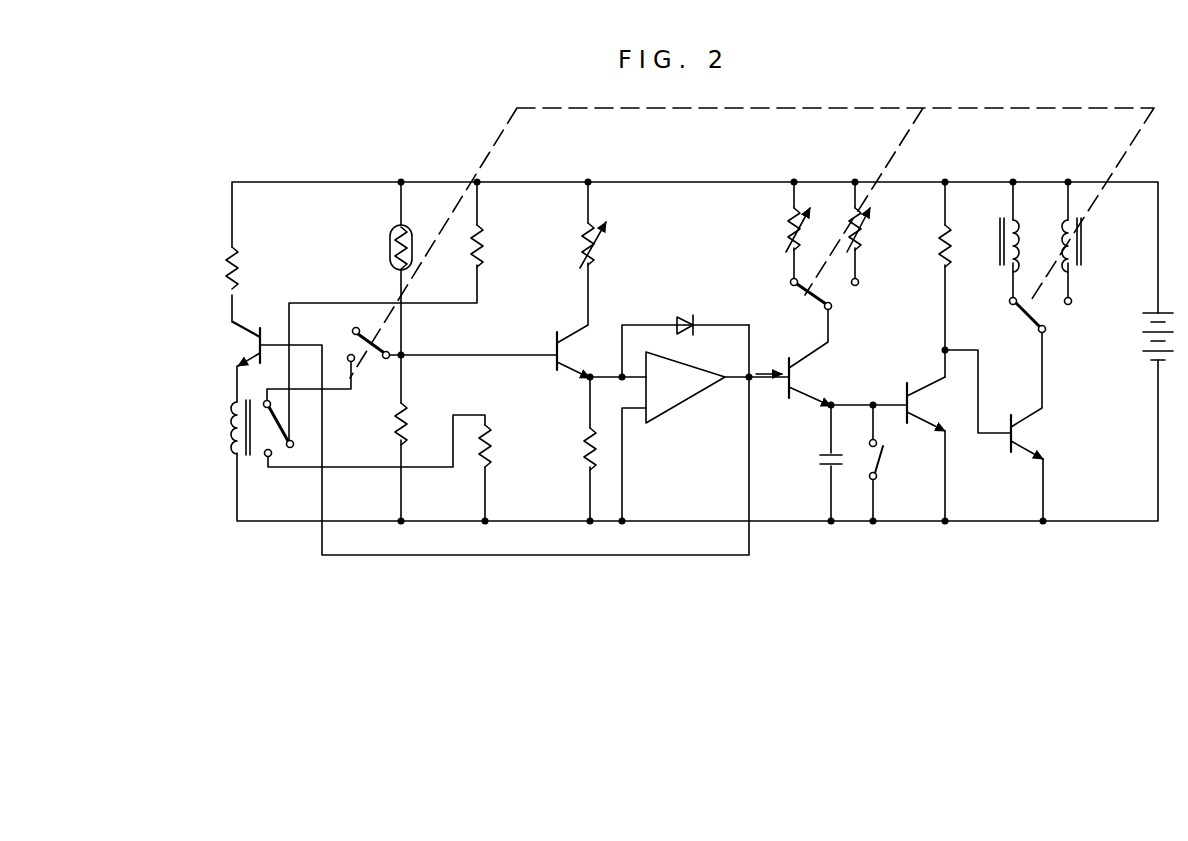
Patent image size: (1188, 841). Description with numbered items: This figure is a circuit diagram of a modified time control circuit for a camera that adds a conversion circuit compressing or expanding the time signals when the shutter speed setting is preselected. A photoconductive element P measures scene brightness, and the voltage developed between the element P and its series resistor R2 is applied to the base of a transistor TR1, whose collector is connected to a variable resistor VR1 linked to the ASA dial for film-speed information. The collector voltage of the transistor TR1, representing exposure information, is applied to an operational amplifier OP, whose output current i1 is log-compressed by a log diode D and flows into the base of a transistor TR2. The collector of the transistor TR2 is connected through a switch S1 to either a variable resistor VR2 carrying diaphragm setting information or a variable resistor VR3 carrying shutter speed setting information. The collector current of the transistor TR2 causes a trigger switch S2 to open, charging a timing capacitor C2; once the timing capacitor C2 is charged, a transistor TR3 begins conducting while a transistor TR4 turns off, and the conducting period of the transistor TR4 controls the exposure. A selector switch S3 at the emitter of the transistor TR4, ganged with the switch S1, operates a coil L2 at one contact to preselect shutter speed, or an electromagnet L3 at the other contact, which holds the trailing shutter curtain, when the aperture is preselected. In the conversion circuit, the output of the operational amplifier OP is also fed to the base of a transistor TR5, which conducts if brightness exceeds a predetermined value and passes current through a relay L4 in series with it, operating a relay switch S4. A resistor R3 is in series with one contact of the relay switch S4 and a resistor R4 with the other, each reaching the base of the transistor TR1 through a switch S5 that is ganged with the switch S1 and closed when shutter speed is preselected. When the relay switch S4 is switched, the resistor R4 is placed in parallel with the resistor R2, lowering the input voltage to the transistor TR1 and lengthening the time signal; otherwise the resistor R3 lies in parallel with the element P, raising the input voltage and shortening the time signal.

The transistor TR5 is at (264, 332).
The relay L4 is at (232, 430).
The relay switch S4 is at (275, 418).
The switch S5 is at (376, 358).
The photoconductive element P is at (390, 249).
The resistor R2 is at (404, 419).
The resistor R3 is at (480, 247).
The resistor R4 is at (490, 455).
The variable resistor VR1 is at (598, 245).
The transistor TR1 is at (556, 348).
The log diode D is at (685, 318).
The operational amplifier OP is at (685, 387).
The output current i1 is at (769, 360).
The transistor TR2 is at (806, 342).
The variable resistor VR2 is at (790, 226).
The variable resistor VR3 is at (860, 234).
The switch S1 is at (831, 300).
The timing capacitor C2 is at (820, 461).
The trigger switch S2 is at (882, 462).
The transistor TR3 is at (905, 392).
The transistor TR4 is at (1009, 428).
The electromagnet L3 is at (998, 248).
The coil L2 is at (1082, 240).
The selector switch S3 is at (1044, 318).